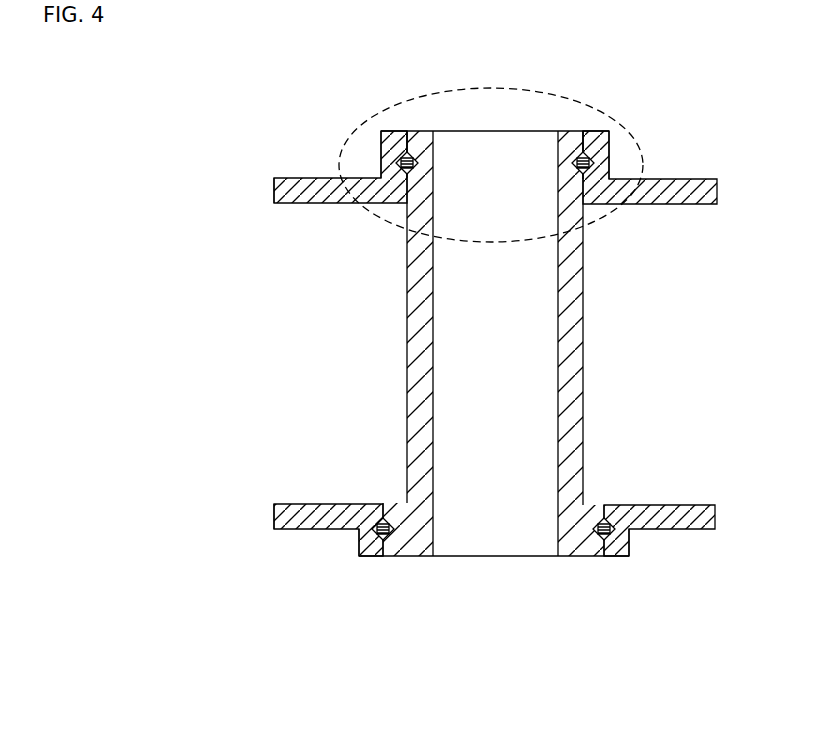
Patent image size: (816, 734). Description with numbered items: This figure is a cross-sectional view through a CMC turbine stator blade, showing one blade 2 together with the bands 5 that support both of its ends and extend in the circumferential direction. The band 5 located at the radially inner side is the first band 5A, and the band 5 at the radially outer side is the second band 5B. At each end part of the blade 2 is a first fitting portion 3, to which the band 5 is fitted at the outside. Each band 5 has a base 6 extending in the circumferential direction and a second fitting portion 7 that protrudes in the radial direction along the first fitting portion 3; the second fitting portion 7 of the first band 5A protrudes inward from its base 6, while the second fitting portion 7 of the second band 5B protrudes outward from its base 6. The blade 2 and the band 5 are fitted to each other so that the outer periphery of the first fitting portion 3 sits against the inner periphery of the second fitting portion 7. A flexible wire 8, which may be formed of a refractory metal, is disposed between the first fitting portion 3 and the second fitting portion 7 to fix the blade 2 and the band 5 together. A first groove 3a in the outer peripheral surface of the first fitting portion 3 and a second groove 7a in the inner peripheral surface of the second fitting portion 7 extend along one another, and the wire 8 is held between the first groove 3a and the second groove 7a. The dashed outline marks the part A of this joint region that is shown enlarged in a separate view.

The blade 2 is at (405, 360).
The first fitting portion 3 is at (425, 157).
The first groove 3a is at (416, 166).
The band 5 is at (477, 334).
The first band 5A is at (301, 502).
The second band 5B is at (307, 177).
The base 6 is at (330, 203).
The second fitting portion 7 is at (385, 150).
The second groove 7a is at (396, 164).
The flexible wire 8 is at (412, 157).
The part A is at (380, 112).